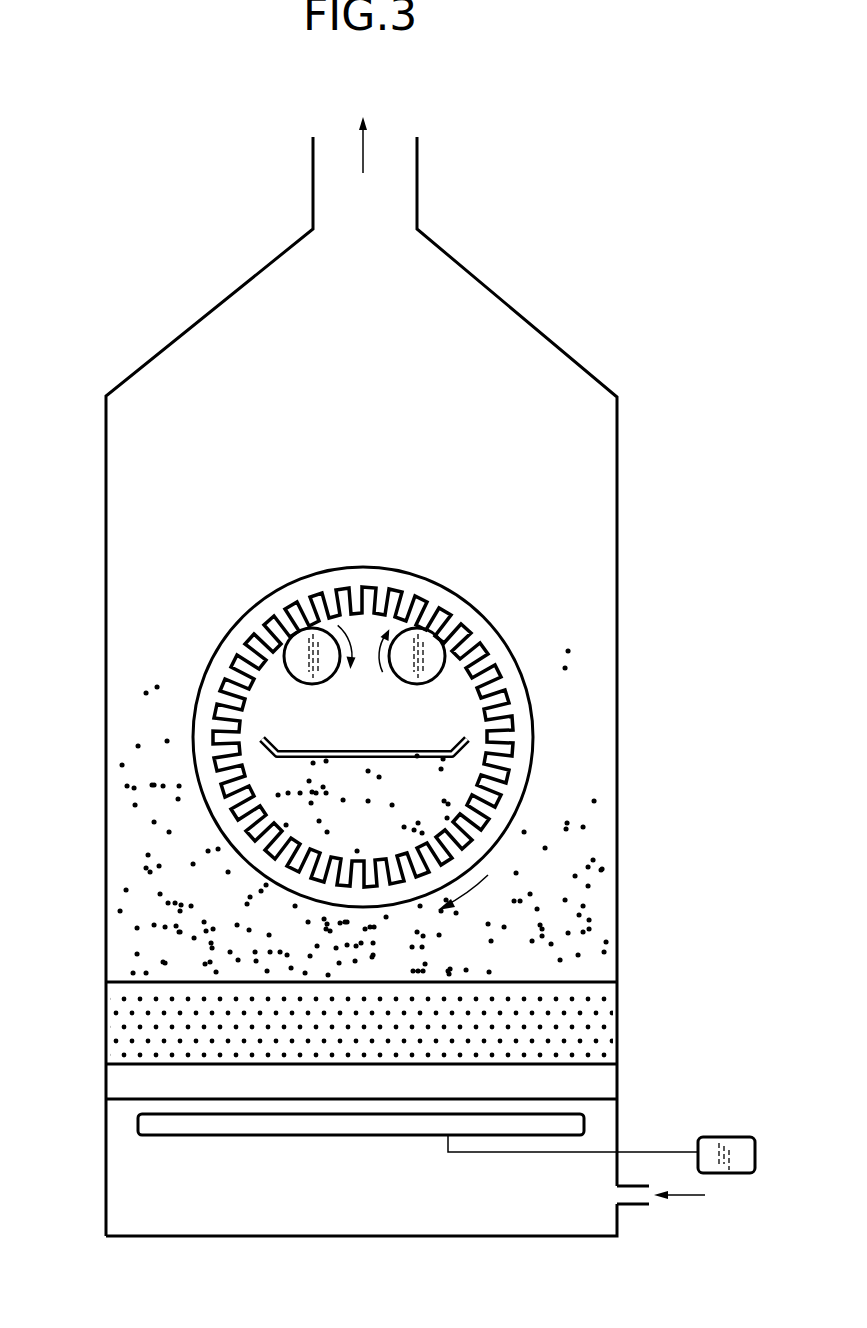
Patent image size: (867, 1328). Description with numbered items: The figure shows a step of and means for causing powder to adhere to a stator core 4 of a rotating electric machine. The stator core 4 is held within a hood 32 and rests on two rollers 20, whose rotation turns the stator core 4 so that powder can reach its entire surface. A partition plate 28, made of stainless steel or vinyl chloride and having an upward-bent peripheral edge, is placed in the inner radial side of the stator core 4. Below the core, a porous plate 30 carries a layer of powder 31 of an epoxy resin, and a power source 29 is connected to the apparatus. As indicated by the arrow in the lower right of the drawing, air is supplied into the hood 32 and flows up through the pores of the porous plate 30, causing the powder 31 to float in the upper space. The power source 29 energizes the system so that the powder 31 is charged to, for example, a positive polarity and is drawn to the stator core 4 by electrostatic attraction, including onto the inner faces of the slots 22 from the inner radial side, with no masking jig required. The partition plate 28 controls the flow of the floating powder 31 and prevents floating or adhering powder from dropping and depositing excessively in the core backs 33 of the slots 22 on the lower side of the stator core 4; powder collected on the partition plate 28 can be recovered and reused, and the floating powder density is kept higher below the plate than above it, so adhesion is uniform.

The hood 32 is at (580, 366).
The stator core 4 is at (407, 587).
The slots 22 is at (505, 767).
The rollers 20 is at (302, 642).
The partition plate 28 is at (412, 745).
The core backs 33 is at (382, 885).
The powder 31 is at (595, 1018).
The porous plate 30 is at (597, 1083).
The power source 29 is at (728, 1137).